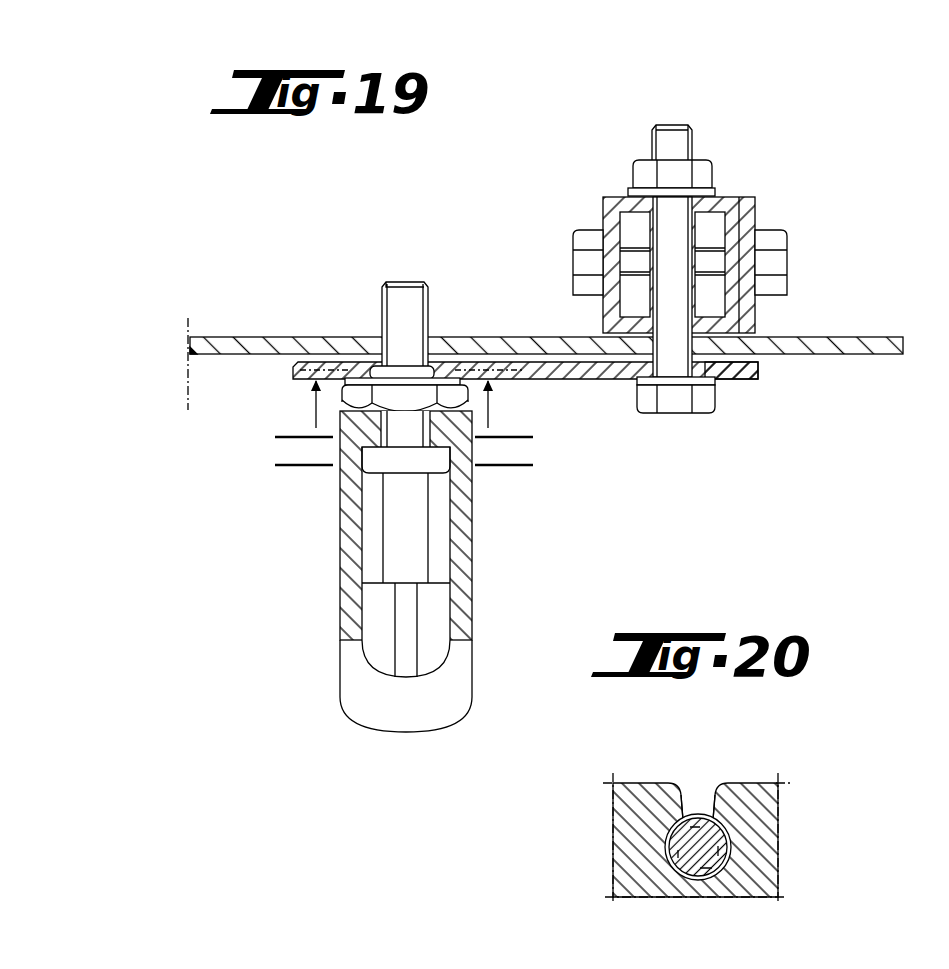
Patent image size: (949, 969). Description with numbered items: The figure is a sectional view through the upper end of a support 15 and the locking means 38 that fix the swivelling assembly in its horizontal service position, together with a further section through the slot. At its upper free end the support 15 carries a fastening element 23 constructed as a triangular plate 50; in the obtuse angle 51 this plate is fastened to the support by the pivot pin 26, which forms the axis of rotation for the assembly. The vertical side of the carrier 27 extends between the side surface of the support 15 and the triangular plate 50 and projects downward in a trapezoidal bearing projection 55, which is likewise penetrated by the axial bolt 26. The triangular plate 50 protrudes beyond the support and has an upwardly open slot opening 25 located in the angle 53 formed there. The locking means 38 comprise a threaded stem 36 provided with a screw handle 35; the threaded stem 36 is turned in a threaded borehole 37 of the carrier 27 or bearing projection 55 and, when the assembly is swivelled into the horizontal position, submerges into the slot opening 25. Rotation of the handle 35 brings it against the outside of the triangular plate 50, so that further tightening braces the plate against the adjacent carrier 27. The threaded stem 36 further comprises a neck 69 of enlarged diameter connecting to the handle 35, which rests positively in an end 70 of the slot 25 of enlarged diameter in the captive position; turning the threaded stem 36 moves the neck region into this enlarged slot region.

In FIG. 19, the support 15 is at (732, 210).
In FIG. 19, the fastening element 23 is at (735, 377).
In FIG. 19, the slot opening 25 is at (358, 362).
In FIG. 20, the slot opening 25 is at (698, 796).
In FIG. 19, the pivot pin 26 is at (676, 360).
In FIG. 19, the carrier 27 is at (222, 344).
In FIG. 19, the screw handle 35 is at (460, 608).
In FIG. 19, the threaded stem 36 is at (398, 300).
In FIG. 20, the threaded stem 36 is at (672, 862).
In FIG. 19, the threaded borehole 37 is at (430, 338).
In FIG. 19, the locking means 38 is at (287, 492).
In FIG. 19, the triangular plate 50 is at (575, 368).
In FIG. 20, the triangular plate 50 is at (760, 820).
In FIG. 19, the obtuse angle corner 51 is at (757, 370).
In FIG. 19, the angle 53 is at (296, 364).
In FIG. 19, the bearing projection 55 is at (278, 348).
In FIG. 19, the neck 69 is at (410, 373).
In FIG. 20, the neck 69 is at (677, 840).
In FIG. 20, the enlarged slot end 70 is at (733, 853).